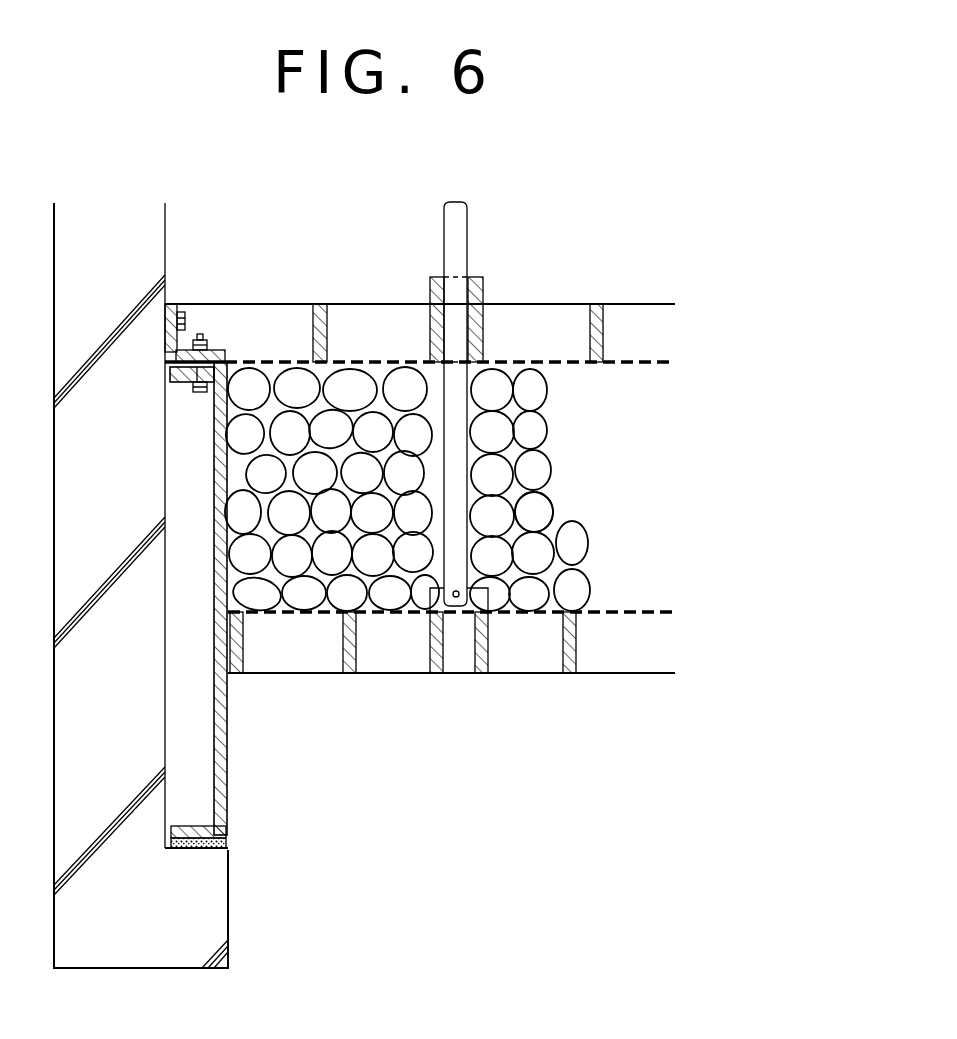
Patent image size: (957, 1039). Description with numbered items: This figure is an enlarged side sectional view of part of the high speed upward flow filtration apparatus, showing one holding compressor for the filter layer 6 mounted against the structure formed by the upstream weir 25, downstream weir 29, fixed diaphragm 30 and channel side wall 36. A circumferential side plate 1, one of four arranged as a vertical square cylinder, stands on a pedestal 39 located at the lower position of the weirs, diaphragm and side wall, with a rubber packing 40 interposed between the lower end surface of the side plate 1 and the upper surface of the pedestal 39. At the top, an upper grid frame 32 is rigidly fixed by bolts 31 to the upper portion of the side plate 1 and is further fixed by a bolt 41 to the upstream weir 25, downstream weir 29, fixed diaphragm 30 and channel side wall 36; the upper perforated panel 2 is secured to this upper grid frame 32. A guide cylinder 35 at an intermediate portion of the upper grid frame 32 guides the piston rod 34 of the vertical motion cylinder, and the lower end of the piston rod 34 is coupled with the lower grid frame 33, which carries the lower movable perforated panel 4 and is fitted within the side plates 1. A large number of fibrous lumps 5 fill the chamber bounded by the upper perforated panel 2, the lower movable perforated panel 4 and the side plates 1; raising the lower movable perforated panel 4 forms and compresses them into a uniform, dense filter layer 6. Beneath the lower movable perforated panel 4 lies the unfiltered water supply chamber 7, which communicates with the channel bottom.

The circumferential side plate 1 is at (228, 760).
The upper perforated panel 2 is at (572, 367).
The lower movable perforated panel 4 is at (625, 610).
The fibrous lump 5 is at (545, 512).
The filter layer 6 is at (548, 458).
The unfiltered water supply chamber 7 is at (525, 765).
The upstream weir 25 is at (171, 550).
The downstream weir 29 is at (171, 550).
The fixed diaphragm 30 is at (171, 550).
The channel side wall 36 is at (105, 235).
The bolt 31 is at (192, 390).
The upper grid frame 32 is at (333, 330).
The lower grid frame 33 is at (433, 675).
The piston rod 34 is at (460, 218).
The guide cylinder 35 is at (480, 278).
The pedestal 39 is at (205, 922).
The rubber packing 40 is at (228, 840).
The bolt 41 is at (187, 325).